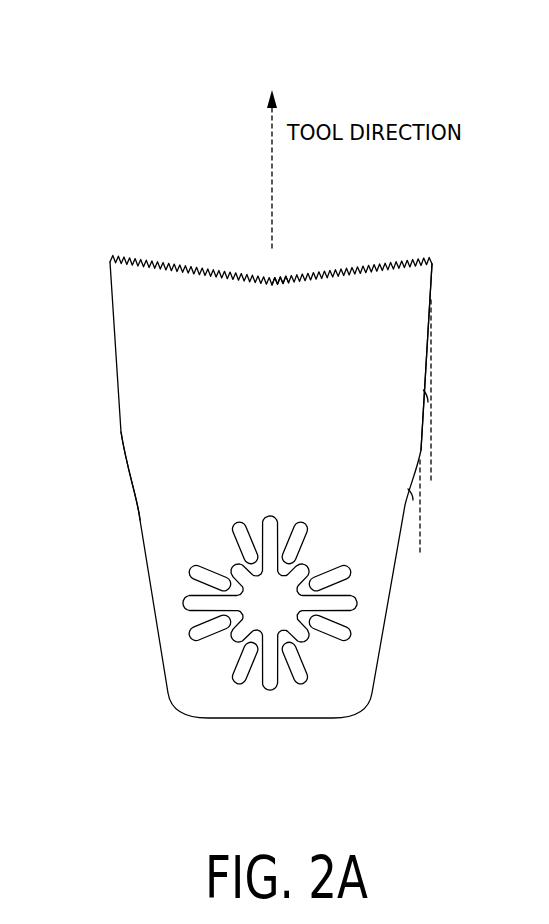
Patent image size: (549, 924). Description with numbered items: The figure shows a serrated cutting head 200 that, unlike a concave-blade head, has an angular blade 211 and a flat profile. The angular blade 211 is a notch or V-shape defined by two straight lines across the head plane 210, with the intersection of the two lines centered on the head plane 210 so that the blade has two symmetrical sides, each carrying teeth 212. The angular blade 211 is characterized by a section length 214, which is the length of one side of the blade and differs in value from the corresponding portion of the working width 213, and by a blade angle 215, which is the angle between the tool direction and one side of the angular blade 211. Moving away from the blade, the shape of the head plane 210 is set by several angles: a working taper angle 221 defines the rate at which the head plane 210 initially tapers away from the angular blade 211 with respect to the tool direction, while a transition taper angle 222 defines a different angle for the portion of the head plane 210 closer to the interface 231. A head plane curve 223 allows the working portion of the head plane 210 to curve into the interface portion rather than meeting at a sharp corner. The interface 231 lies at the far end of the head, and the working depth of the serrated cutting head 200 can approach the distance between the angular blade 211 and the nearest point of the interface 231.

The serrated cutting head 200 is at (168, 87).
The head plane 210 is at (112, 333).
The angular blade 211 is at (433, 272).
The teeth 212 is at (432, 264).
The working width 213 is at (434, 170).
The section length 214 is at (272, 277).
The blade angle 215 is at (330, 268).
The working taper angle 221 is at (428, 398).
The transition taper angle 222 is at (412, 497).
The head plane curve 223 is at (138, 516).
The interface 231 is at (345, 608).